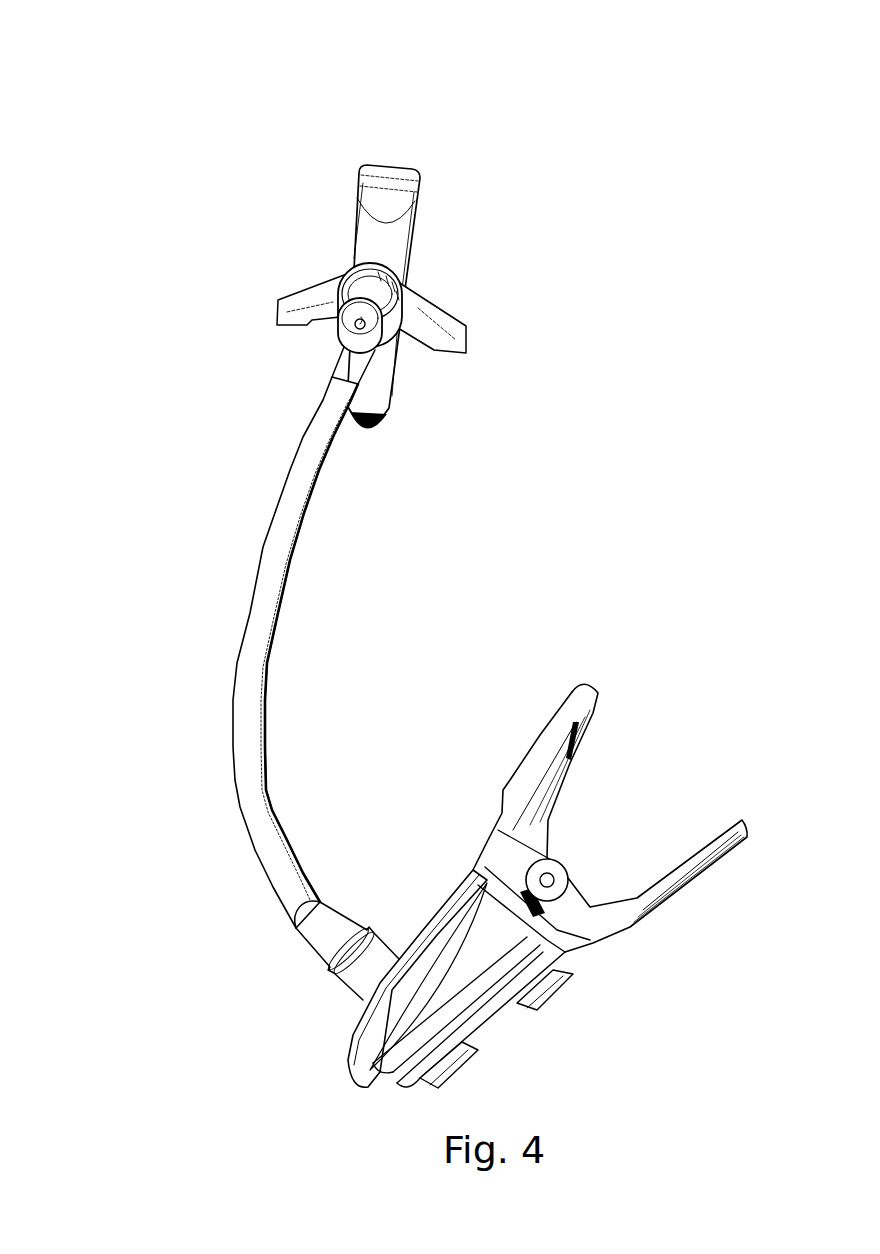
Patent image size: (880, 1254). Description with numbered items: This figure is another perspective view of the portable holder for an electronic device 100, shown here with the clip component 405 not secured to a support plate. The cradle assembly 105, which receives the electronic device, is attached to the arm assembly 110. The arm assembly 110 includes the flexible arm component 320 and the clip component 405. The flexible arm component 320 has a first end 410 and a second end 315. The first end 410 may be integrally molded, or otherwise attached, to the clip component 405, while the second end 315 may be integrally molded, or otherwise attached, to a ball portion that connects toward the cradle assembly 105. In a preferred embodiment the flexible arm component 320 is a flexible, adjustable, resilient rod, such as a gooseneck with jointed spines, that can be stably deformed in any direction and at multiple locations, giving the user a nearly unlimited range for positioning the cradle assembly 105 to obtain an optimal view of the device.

The portable holder for an electronic device 100 is at (150, 130).
The cradle assembly 105 is at (440, 217).
The arm assembly 110 is at (262, 512).
The second end 315 is at (357, 327).
The flexible arm component 320 is at (248, 760).
The clip component 405 is at (628, 930).
The first end 410 is at (360, 967).